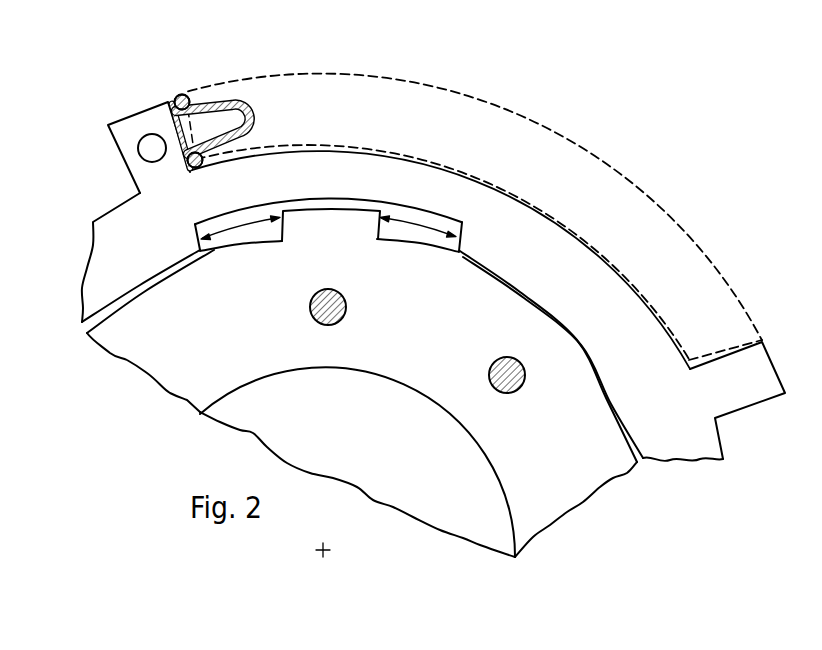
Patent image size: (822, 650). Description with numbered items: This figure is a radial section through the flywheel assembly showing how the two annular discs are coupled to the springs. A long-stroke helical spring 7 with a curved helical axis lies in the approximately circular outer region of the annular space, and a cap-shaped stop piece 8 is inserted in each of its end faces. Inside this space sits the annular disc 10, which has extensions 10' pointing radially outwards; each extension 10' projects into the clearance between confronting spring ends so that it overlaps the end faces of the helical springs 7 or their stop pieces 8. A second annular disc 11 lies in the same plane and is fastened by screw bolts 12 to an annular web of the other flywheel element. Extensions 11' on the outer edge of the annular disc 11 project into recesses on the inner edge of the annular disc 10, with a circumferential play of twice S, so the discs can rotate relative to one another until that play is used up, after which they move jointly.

The helical spring 7 is at (567, 150).
The stop piece 8 is at (247, 125).
The annular disc 10 is at (402, 306).
The extension 10' is at (462, 258).
The annular disc 11 is at (362, 403).
The extension 11' is at (331, 235).
The screw bolt 12 is at (347, 302).
The play S is at (245, 227).